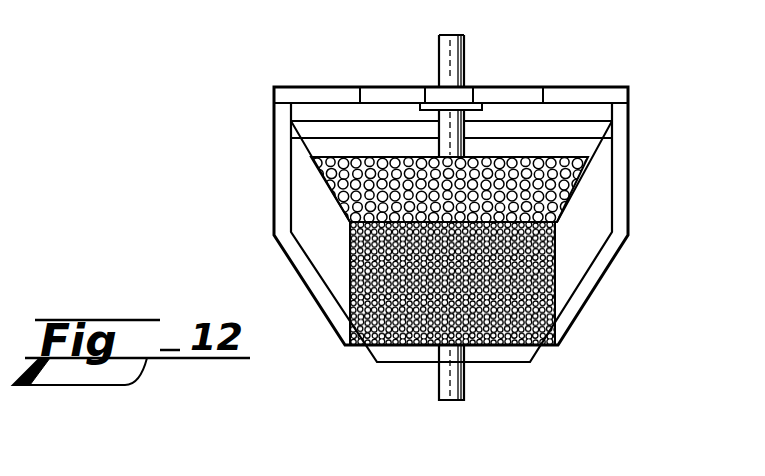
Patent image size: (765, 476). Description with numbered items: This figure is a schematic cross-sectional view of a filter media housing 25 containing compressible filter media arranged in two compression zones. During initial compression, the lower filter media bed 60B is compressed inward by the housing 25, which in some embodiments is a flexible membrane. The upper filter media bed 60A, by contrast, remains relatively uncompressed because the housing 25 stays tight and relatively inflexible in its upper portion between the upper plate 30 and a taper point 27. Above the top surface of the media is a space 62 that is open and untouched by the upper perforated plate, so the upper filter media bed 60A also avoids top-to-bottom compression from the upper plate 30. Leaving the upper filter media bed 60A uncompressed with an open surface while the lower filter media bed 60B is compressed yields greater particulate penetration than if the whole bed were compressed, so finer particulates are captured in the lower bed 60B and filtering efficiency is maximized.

The upper plate 30 is at (588, 128).
The filter media housing 25 is at (587, 173).
The space 62 is at (577, 143).
The upper filter media bed 60A is at (347, 155).
The lower filter media bed 60B is at (498, 347).
The taper point 27 is at (557, 222).